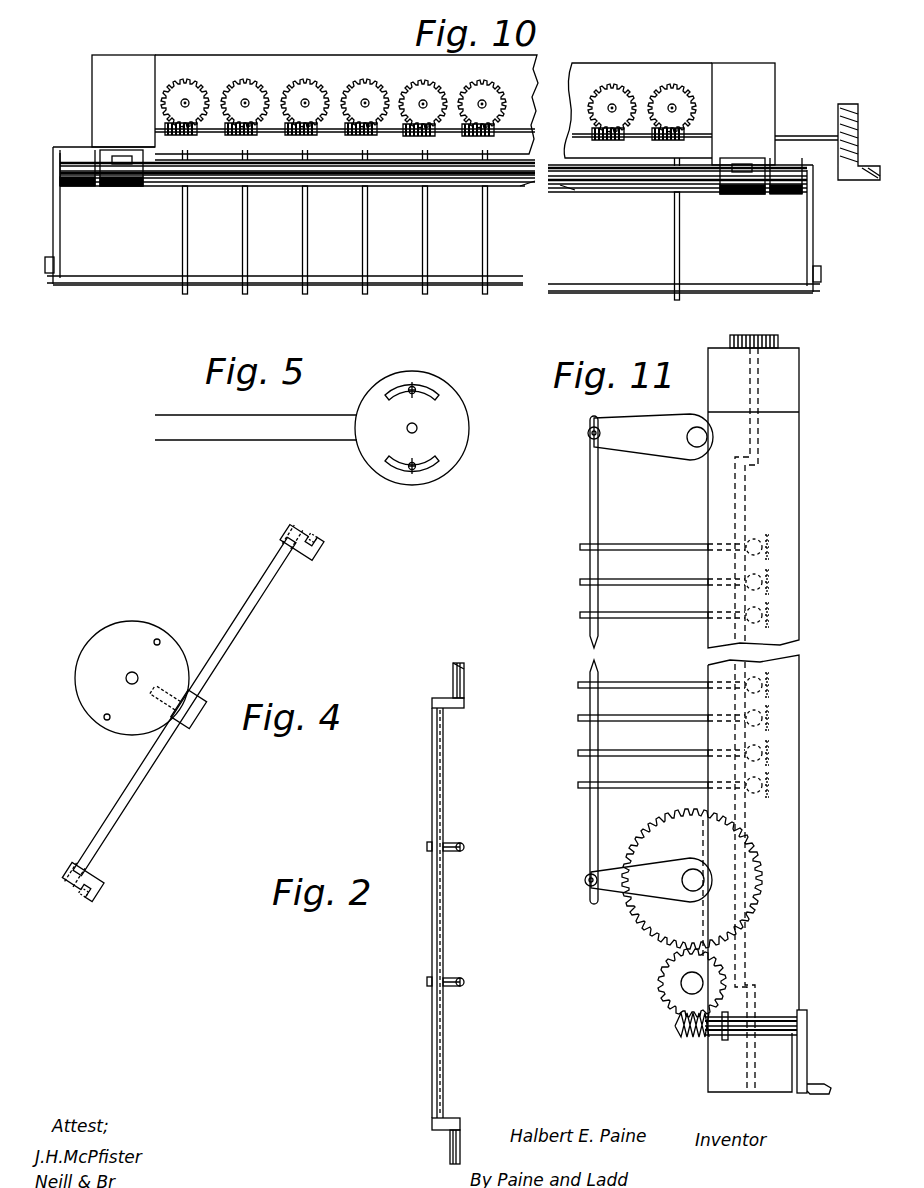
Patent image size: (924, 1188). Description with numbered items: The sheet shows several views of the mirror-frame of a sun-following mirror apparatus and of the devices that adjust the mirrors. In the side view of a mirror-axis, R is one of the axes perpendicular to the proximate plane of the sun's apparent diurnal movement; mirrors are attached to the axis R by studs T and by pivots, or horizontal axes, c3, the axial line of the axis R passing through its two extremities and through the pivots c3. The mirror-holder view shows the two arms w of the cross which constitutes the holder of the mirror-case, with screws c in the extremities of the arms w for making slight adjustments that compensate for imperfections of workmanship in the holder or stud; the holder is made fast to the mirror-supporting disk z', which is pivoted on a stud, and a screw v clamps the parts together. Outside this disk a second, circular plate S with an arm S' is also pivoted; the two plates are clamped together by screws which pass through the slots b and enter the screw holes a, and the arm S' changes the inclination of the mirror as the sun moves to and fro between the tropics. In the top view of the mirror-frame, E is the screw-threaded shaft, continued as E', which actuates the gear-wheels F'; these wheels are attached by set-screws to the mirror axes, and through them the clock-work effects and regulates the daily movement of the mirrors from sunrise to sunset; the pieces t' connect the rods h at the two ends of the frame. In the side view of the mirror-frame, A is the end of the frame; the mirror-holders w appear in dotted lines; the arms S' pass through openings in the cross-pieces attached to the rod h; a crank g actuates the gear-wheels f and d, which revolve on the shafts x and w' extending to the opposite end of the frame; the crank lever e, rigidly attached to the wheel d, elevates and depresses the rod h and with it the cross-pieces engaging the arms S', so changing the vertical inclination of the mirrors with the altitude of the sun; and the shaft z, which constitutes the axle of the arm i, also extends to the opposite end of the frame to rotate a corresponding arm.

In FIG. 10, the gear-wheels F' is at (428, 101).
In FIG. 10, the worm shaft E' is at (433, 142).
In FIG. 10, the screw-threaded shaft E is at (827, 142).
In FIG. 10, the arm i is at (57, 165).
In FIG. 11, the arm i is at (650, 437).
In FIG. 10, the arm S' is at (431, 225).
In FIG. 5, the arm S' is at (256, 427).
In FIG. 11, the arm S' is at (661, 666).
In FIG. 5, the circular plate S is at (412, 428).
In FIG. 10, the shaft z is at (549, 194).
In FIG. 11, the shaft z is at (694, 415).
In FIG. 4, the disk z' is at (132, 678).
In FIG. 10, the rod h is at (55, 262).
In FIG. 11, the rod h is at (590, 515).
In FIG. 10, the base rail t' is at (433, 299).
In FIG. 5, the slot / block v is at (412, 428).
In FIG. 4, the slot / block v is at (205, 712).
In FIG. 5, the slots b is at (414, 386).
In FIG. 4, the screw holes a is at (160, 640).
In FIG. 4, the arms of the cross (mirror-holder) w is at (184, 706).
In FIG. 11, the arms of the cross (mirror-holder) w is at (769, 666).
In FIG. 4, the screws c is at (288, 548).
In FIG. 2, the axis R is at (466, 678).
In FIG. 11, the axis R is at (745, 503).
In FIG. 2, the studs T is at (449, 843).
In FIG. 2, the pivots (horizontal axes) c3 is at (464, 847).
In FIG. 11, the end of the mirror-frame A is at (753, 491).
In FIG. 11, the gear-wheel d is at (692, 884).
In FIG. 11, the crank lever e is at (648, 880).
In FIG. 11, the shaft w' is at (683, 909).
In FIG. 11, the gear-wheel f is at (692, 983).
In FIG. 11, the shaft x is at (682, 990).
In FIG. 11, the crank g is at (806, 1066).